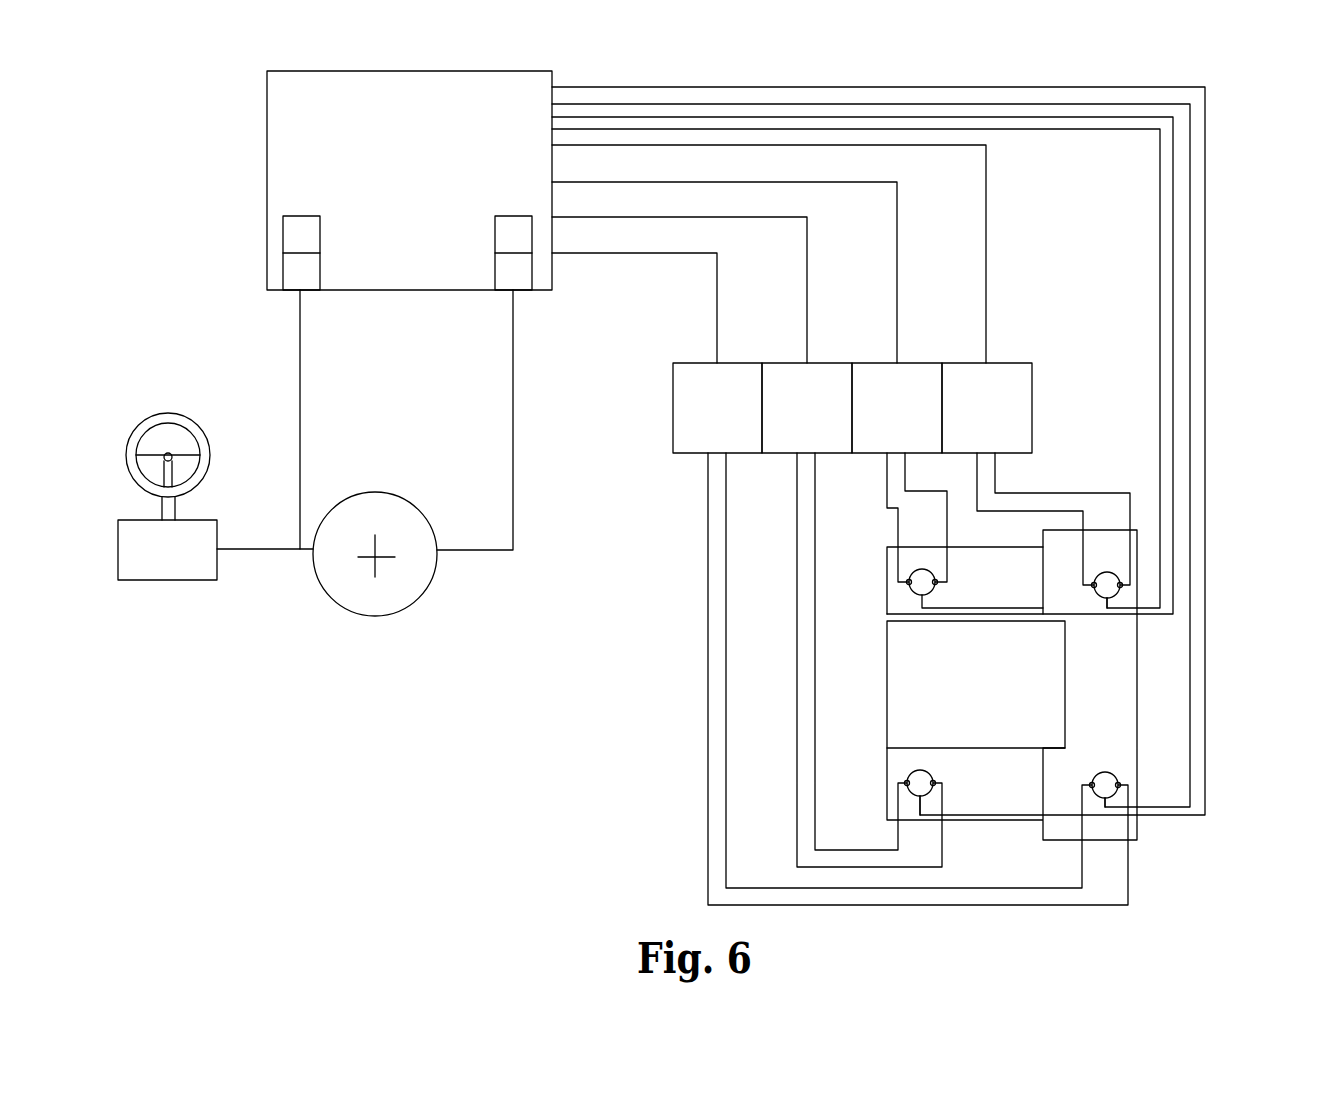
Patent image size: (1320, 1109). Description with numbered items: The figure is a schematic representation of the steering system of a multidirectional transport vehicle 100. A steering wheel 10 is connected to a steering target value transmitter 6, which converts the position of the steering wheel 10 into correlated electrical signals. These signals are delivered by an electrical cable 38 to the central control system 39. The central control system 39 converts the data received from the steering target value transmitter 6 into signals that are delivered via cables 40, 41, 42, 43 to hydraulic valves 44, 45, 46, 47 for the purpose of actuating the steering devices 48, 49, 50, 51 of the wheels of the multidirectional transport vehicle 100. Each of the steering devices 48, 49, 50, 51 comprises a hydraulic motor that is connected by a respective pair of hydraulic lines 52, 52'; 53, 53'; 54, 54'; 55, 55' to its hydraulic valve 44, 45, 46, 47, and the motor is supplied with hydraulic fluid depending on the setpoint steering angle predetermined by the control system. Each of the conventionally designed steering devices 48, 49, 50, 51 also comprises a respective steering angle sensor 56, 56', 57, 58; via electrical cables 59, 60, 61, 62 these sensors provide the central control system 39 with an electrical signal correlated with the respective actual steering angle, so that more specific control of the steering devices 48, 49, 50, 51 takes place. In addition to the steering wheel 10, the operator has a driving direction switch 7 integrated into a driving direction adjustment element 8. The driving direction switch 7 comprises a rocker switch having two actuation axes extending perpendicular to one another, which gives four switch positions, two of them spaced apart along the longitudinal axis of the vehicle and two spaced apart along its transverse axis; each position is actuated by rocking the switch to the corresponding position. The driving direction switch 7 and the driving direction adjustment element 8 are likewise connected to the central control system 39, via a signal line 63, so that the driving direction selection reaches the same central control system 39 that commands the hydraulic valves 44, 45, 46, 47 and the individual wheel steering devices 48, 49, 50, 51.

The steering target value transmitter 6 is at (174, 557).
The driving direction switch 7 is at (426, 476).
The driving direction adjustment element 8 is at (448, 487).
The steering wheel 10 is at (168, 413).
The electrical cable 38 is at (300, 372).
The central control system 39 is at (409, 180).
The cable 40 is at (717, 298).
The cable 41 is at (807, 302).
The cable 42 is at (897, 298).
The cable 43 is at (986, 298).
The hydraulic valve 44 is at (707, 425).
The hydraulic valve 45 is at (797, 425).
The hydraulic valve 46 is at (887, 425).
The hydraulic valve 47 is at (977, 425).
The steering device 48 is at (923, 590).
The steering device 49 is at (1117, 612).
The steering device 50 is at (912, 772).
The steering device 51 is at (1101, 773).
The hydraulic line 52 is at (879, 679).
The hydraulic line 52' is at (909, 670).
The hydraulic line 53 is at (846, 660).
The hydraulic line 53' is at (861, 651).
The hydraulic line 54 is at (871, 517).
The hydraulic line 54' is at (924, 517).
The hydraulic line 55 is at (1035, 519).
The hydraulic line 55' is at (1062, 515).
The steering angle sensor 56 is at (1077, 592).
The steering angle sensor 56' is at (982, 588).
The steering angle sensor 57 is at (937, 798).
The steering angle sensor 58 is at (1108, 800).
The electrical cable 59 is at (1160, 228).
The electrical cable 60 is at (1173, 282).
The electrical cable 61 is at (1190, 325).
The electrical cable 62 is at (1205, 372).
The signal line 63 is at (513, 378).
The multidirectional transport vehicle 100 is at (1113, 683).